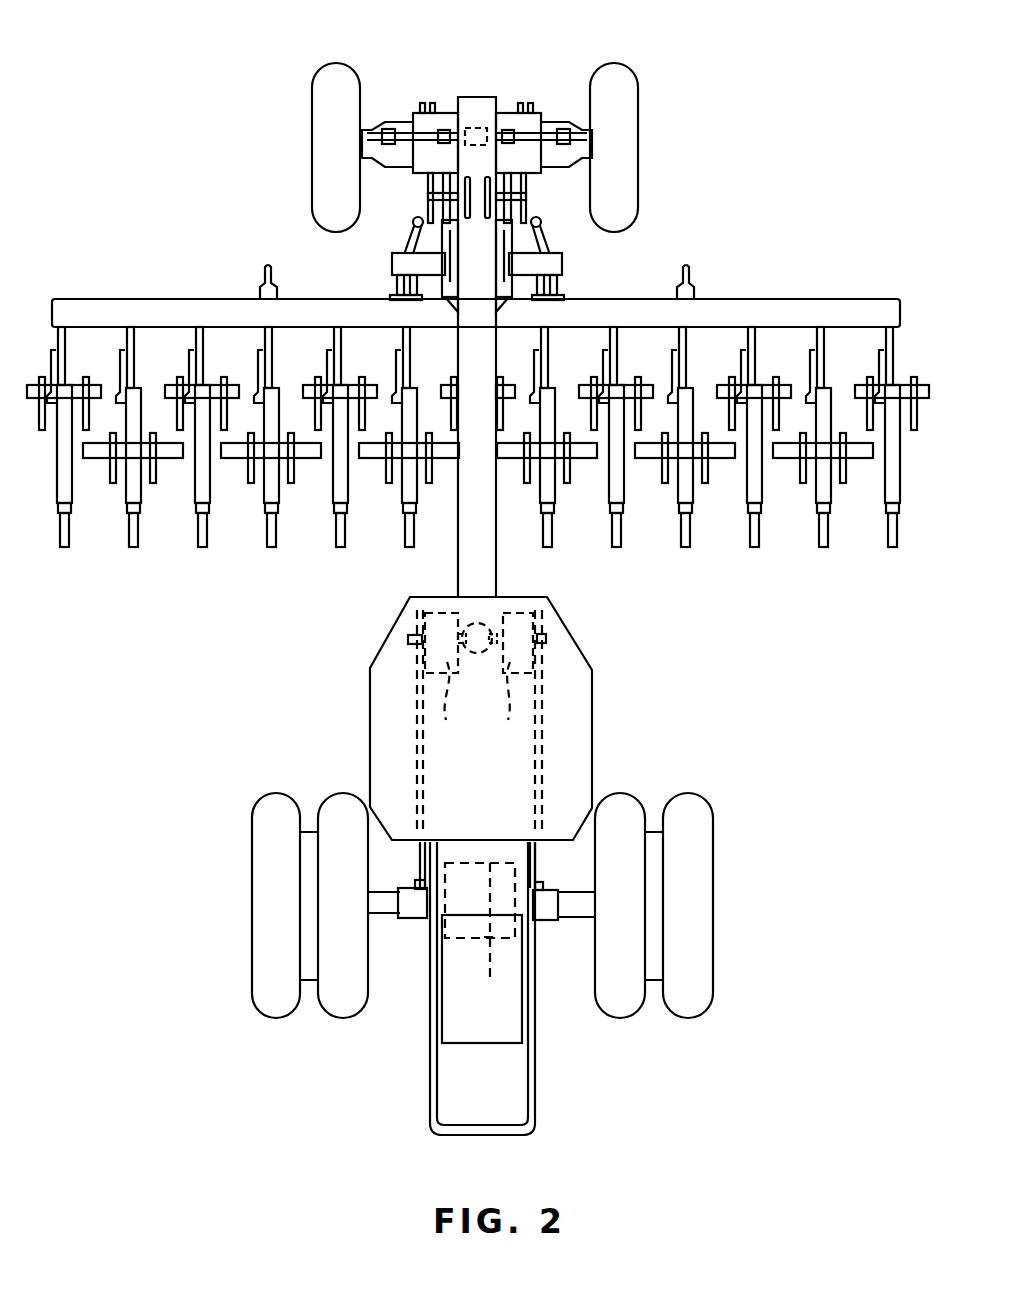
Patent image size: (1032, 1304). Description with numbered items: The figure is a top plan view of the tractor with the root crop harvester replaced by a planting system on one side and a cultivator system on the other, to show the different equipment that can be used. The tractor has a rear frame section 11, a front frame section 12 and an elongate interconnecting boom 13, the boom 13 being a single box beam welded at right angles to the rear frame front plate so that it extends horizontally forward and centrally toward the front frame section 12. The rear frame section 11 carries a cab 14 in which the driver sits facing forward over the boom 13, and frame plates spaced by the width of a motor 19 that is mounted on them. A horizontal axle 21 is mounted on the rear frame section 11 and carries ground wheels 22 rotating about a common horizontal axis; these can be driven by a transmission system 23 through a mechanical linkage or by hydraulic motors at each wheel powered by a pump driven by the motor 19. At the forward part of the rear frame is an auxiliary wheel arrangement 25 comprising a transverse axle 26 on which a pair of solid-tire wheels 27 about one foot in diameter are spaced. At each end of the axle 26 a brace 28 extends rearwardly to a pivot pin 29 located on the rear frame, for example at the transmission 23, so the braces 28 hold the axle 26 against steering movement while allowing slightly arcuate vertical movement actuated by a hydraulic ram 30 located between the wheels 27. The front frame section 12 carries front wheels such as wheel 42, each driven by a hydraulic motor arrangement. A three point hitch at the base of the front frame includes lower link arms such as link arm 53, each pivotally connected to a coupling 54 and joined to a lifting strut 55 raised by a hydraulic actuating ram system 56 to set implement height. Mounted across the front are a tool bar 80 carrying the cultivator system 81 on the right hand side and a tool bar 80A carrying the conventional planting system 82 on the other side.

The rear frame section 11 is at (683, 752).
The front frame section 12 is at (527, 82).
The boom 13 is at (462, 530).
The cab 14 is at (370, 770).
The motor 19 is at (455, 1018).
The horizontal axle 21 is at (413, 912).
The ground wheels 22 is at (338, 1008).
The transmission system 23 is at (492, 945).
The auxiliary wheel arrangement 25 is at (528, 615).
The transverse axle 26 is at (546, 638).
The wheels 27 is at (477, 699).
The braces 28 is at (417, 718).
The pivot pin 29 is at (565, 920).
The hydraulic ram 30 is at (470, 625).
The front wheel 42 is at (625, 92).
The lower link arm 53 is at (410, 235).
The coupling 54 is at (542, 230).
The lifting strut 55 is at (426, 195).
The hydraulic actuating ram system 56 is at (425, 262).
The tool bar 80 is at (812, 299).
The tool bar 80A is at (192, 299).
The cultivator system 81 is at (789, 552).
The planting system 82 is at (213, 567).